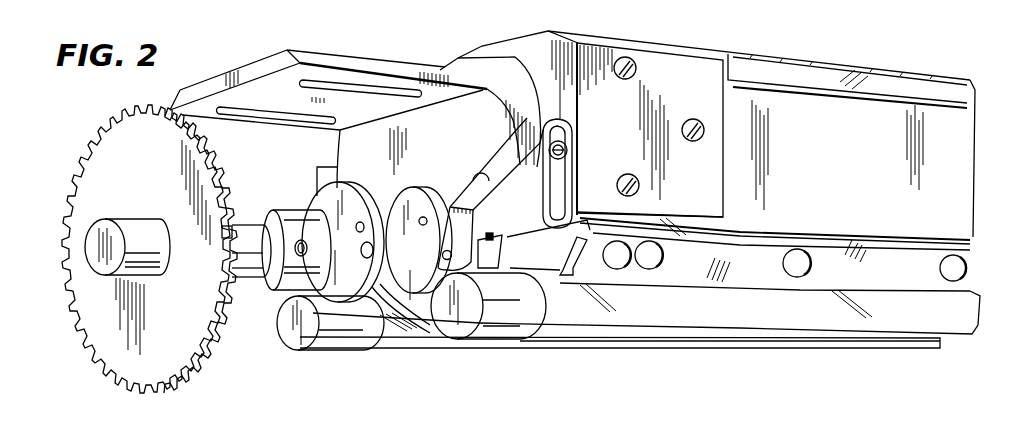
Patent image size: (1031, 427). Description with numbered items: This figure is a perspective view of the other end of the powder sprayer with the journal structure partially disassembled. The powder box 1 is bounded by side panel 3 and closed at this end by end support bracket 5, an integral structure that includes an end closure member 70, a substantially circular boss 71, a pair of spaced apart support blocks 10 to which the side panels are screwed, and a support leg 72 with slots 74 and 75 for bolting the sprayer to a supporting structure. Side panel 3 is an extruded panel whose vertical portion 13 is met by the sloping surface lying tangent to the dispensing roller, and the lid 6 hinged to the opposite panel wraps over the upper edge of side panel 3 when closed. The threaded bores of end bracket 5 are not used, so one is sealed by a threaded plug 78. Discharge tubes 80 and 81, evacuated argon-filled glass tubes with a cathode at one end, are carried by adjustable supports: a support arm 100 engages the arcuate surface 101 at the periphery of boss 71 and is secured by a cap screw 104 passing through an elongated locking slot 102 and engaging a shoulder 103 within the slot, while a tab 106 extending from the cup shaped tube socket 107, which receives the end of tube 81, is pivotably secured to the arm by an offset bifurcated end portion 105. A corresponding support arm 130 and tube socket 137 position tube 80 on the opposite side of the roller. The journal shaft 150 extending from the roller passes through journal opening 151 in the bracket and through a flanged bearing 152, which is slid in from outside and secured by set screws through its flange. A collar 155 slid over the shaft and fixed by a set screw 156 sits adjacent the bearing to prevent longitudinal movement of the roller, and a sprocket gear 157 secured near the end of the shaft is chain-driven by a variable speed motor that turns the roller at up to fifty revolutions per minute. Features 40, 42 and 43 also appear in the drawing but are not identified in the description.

The powder box 1 is at (976, 164).
The side panel 3 is at (956, 186).
The end support bracket 5 is at (350, 149).
The lid 6 is at (877, 84).
The support blocks 10 is at (660, 67).
The vertical portion 13 is at (410, 200).
The lower rail 40 is at (883, 255).
The holes 42 is at (662, 263).
The latch bar 43 is at (573, 254).
The end closure member 70 is at (528, 60).
The circular boss 71 is at (436, 158).
The support leg 72 is at (258, 66).
The slot 74 is at (272, 118).
The slot 75 is at (303, 89).
The threaded plug 78 is at (477, 177).
The discharge tube 80 is at (620, 340).
The discharge tube 81 is at (693, 328).
The support arm 100 is at (530, 202).
The arcuate surface 101 is at (515, 108).
The elongated locking slot 102 is at (553, 185).
The shoulder 103 is at (560, 173).
The cap screw 104 is at (565, 149).
The offset bifurcated end portion 105 is at (513, 257).
The tab 106 is at (490, 233).
The tube socket 107 is at (452, 343).
The support arm 130 is at (317, 178).
The tube socket 137 is at (300, 353).
The journal shaft 150 is at (137, 222).
The journal opening 151 is at (427, 219).
The flanged bearing 152 is at (340, 192).
The collar 155 is at (290, 300).
The set screw 156 is at (308, 248).
The sprocket gear 157 is at (110, 140).